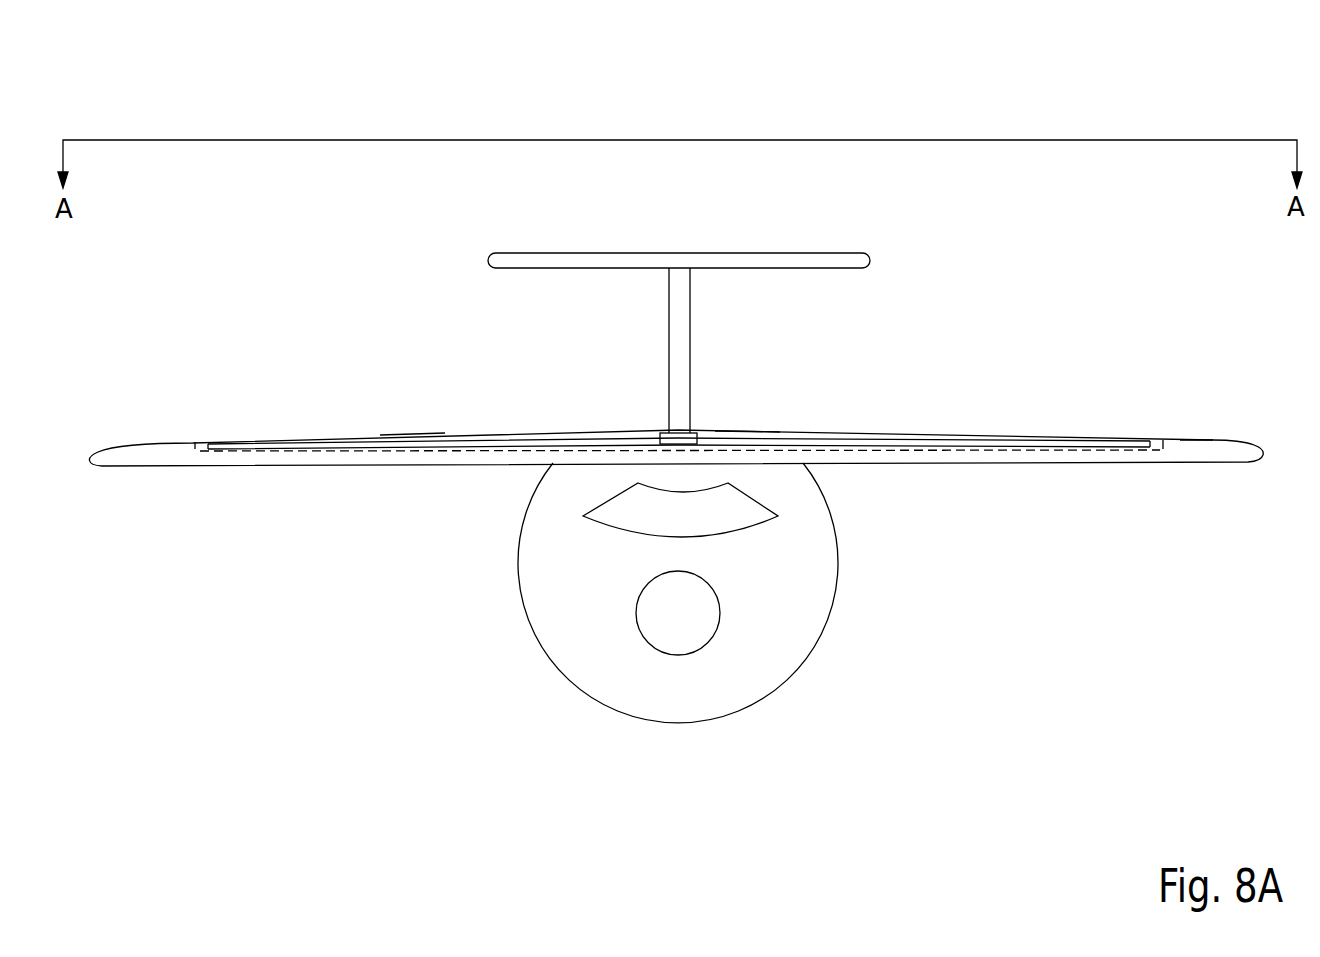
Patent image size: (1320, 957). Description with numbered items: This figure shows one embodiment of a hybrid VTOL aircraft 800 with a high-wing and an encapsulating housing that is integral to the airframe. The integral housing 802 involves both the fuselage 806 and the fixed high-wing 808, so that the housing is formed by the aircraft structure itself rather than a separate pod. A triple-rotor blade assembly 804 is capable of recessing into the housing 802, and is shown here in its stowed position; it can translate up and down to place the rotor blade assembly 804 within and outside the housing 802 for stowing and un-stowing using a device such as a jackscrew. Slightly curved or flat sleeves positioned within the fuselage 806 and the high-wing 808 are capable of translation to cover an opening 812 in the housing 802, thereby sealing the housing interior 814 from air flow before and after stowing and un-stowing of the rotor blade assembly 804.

The aircraft 800 is at (1256, 72).
The integral housing 802 is at (198, 450).
The triple-rotor blade assembly 804 is at (933, 444).
The fuselage 806 is at (834, 602).
The fixed high-wing 808 is at (1216, 439).
The opening 812 is at (412, 436).
The housing interior 814 is at (1017, 450).